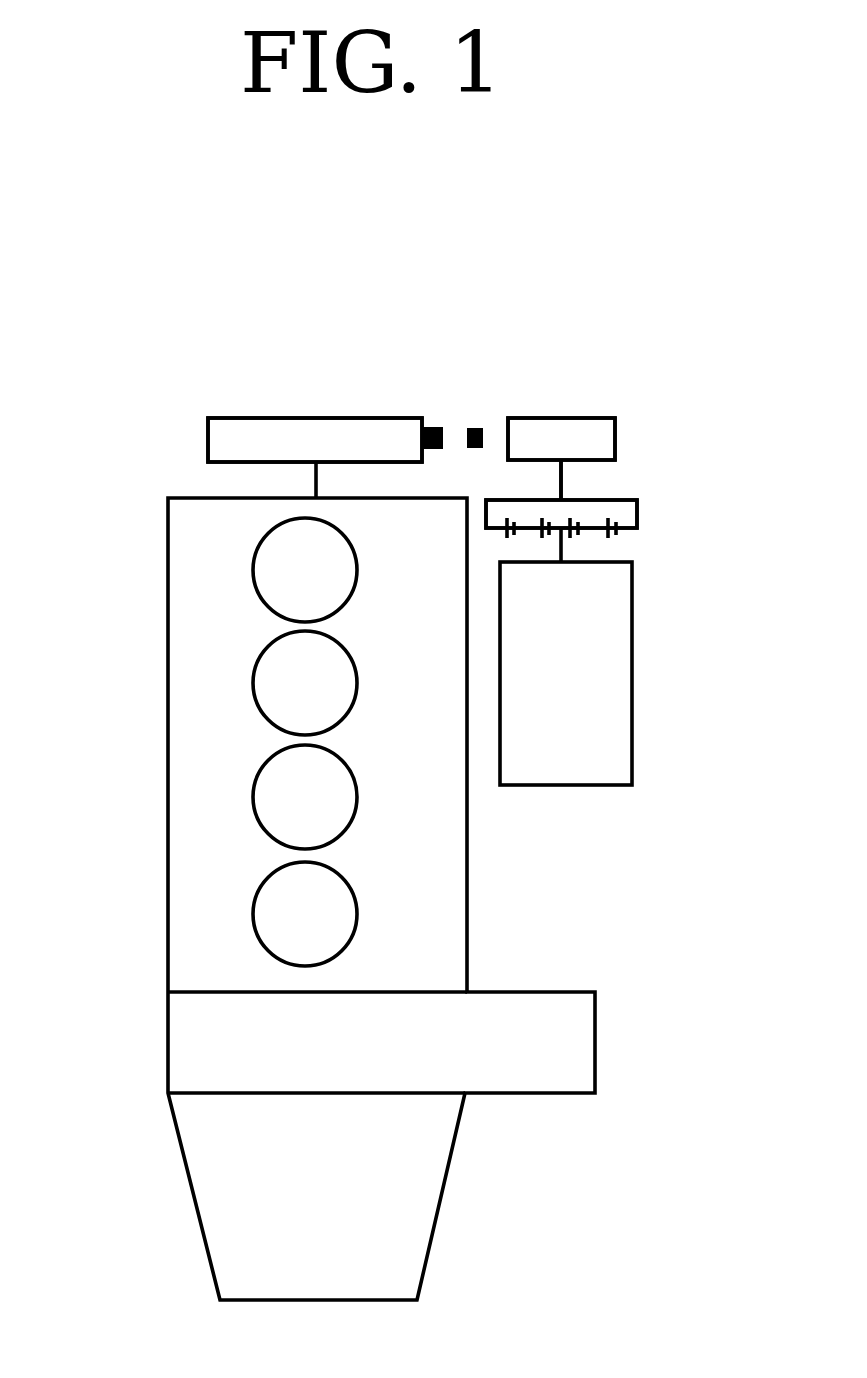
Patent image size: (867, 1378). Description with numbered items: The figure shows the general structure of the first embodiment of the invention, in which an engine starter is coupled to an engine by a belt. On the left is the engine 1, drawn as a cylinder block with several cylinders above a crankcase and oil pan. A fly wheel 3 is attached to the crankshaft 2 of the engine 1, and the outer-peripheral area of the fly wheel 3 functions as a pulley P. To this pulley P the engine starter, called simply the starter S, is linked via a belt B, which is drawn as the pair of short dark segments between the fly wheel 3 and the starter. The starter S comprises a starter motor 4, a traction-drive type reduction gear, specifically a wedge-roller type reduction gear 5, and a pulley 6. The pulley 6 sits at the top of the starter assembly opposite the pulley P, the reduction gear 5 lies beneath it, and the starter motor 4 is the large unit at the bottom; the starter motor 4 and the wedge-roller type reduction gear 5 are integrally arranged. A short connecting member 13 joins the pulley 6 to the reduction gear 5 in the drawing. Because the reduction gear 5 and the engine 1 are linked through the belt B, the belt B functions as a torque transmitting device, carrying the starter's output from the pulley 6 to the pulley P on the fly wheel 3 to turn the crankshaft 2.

The engine 1 is at (168, 768).
The crankshaft 2 is at (316, 477).
The fly wheel 3 is at (273, 418).
The pulley P is at (208, 438).
The belt B is at (435, 427).
The engine starter S is at (592, 364).
The pulley 6 is at (618, 433).
The signal line 13 is at (563, 480).
The wedge-roller type reduction gear 5 is at (637, 507).
The starter motor 4 is at (612, 713).